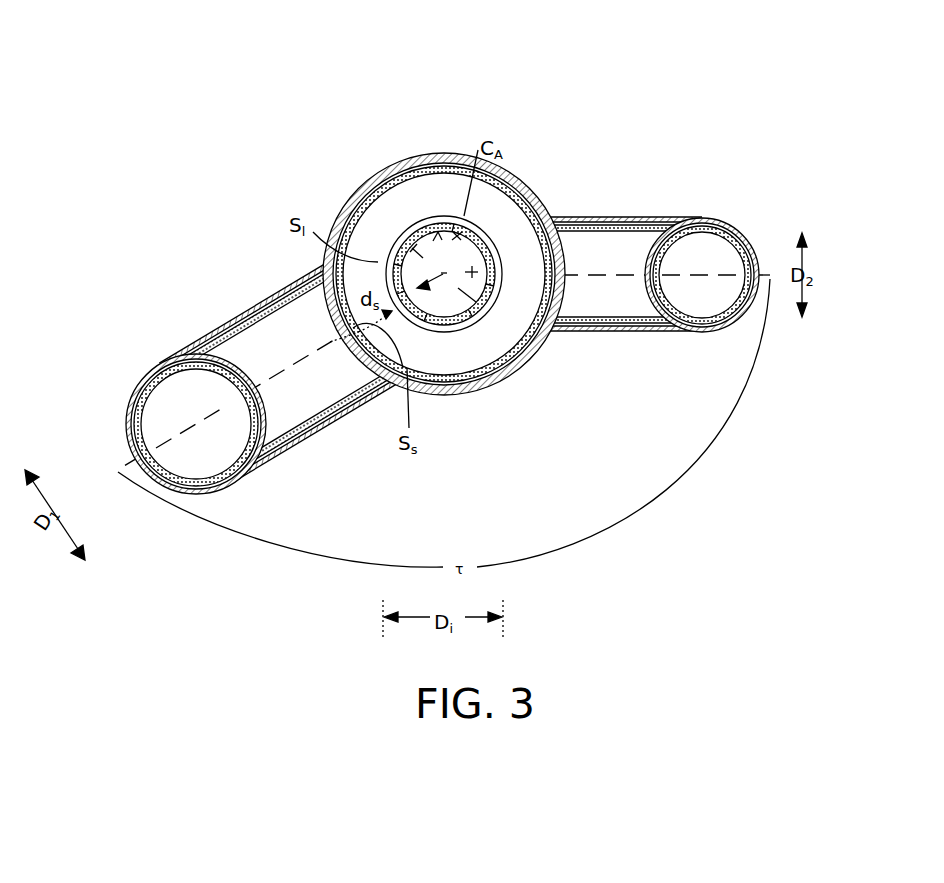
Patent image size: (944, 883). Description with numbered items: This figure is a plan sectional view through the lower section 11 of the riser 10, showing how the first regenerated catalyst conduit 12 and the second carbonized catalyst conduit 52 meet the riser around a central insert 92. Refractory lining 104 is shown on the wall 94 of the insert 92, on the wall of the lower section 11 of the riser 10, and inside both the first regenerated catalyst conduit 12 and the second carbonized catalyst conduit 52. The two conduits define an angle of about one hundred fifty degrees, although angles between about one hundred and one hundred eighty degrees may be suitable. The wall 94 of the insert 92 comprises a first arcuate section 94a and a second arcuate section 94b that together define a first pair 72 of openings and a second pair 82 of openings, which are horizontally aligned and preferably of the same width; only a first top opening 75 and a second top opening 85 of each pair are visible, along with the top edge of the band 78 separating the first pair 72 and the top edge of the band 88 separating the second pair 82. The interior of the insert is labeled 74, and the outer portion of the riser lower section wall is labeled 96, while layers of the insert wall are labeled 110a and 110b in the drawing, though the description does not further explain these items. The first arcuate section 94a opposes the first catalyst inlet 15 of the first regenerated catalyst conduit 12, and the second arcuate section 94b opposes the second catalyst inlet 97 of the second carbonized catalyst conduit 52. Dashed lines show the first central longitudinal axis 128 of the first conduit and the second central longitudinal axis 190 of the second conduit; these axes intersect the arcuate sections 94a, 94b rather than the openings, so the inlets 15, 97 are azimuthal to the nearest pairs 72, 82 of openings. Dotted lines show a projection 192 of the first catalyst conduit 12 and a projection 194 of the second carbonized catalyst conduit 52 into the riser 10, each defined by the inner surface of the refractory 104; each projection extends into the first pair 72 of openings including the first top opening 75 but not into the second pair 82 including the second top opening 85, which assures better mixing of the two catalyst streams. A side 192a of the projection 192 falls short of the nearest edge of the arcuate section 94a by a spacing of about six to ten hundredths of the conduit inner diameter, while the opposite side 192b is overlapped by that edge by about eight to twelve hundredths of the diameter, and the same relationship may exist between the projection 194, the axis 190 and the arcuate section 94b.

The riser 10 is at (183, 158).
The lower section of the riser 11 is at (520, 334).
The first regenerated catalyst conduit 12 is at (210, 333).
The first catalyst inlet 15 is at (415, 345).
The second carbonized catalyst conduit 52 is at (645, 225).
The first pair of openings 72 is at (451, 360).
The inner lumen 74 is at (444, 274).
The first top opening 75 is at (463, 323).
The band 78 is at (477, 320).
The second pair of openings 82 is at (421, 190).
The second top opening 85 is at (402, 235).
The band 88 is at (436, 232).
The insert 92 is at (497, 232).
The wall of the insert 94 is at (492, 212).
The first arcuate section 94a is at (345, 268).
The second arcuate section 94b is at (520, 234).
The outer tube 96 is at (521, 298).
The second catalyst inlet 97 is at (553, 282).
The refractory lining 104 is at (348, 212).
The first coating layer 110a is at (460, 208).
The second coating layer 110b is at (408, 240).
The first central longitudinal axis 128 is at (197, 421).
The second central longitudinal axis 190 is at (733, 283).
The projection of the first catalyst conduit 192 is at (390, 247).
The side of the projection 192a is at (385, 272).
The opposite side of the projection 192b is at (440, 333).
The projection of the second catalyst conduit 194 is at (492, 320).